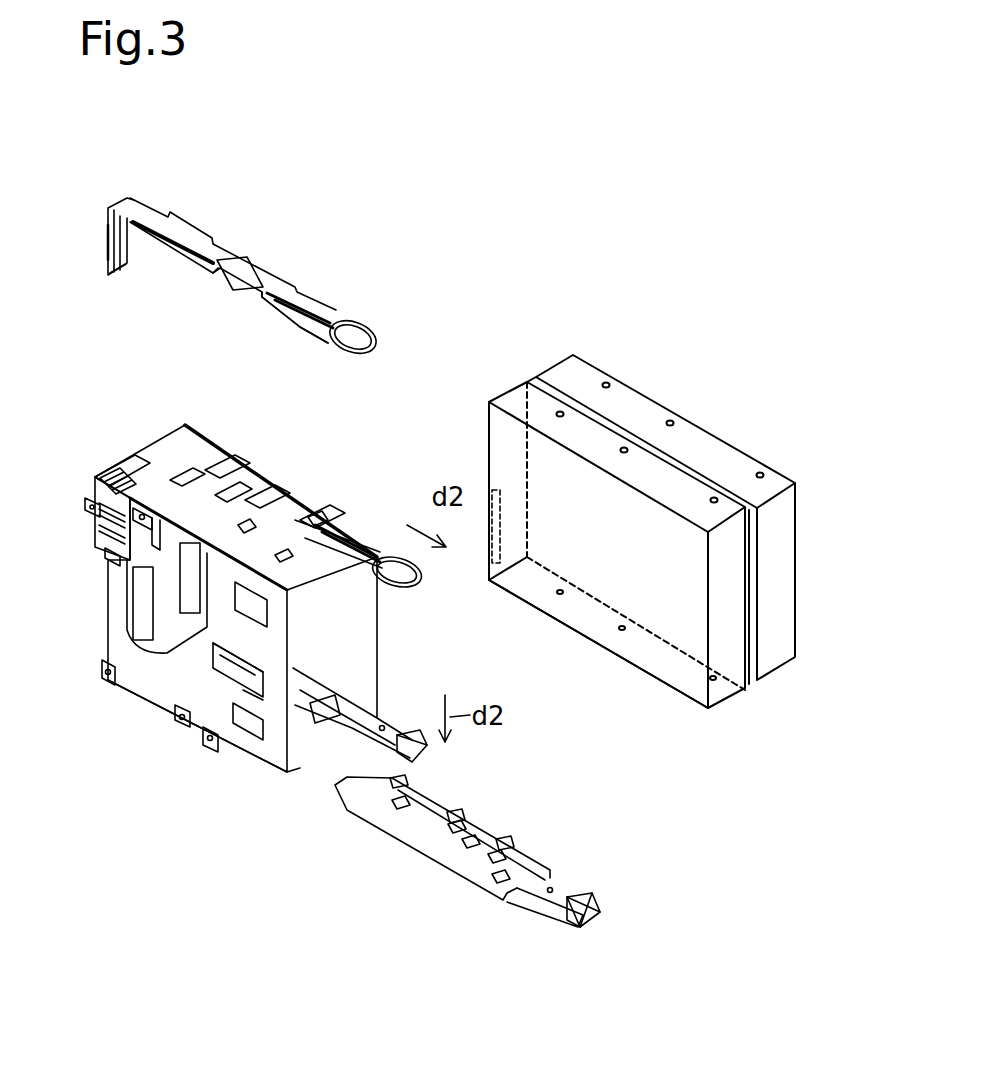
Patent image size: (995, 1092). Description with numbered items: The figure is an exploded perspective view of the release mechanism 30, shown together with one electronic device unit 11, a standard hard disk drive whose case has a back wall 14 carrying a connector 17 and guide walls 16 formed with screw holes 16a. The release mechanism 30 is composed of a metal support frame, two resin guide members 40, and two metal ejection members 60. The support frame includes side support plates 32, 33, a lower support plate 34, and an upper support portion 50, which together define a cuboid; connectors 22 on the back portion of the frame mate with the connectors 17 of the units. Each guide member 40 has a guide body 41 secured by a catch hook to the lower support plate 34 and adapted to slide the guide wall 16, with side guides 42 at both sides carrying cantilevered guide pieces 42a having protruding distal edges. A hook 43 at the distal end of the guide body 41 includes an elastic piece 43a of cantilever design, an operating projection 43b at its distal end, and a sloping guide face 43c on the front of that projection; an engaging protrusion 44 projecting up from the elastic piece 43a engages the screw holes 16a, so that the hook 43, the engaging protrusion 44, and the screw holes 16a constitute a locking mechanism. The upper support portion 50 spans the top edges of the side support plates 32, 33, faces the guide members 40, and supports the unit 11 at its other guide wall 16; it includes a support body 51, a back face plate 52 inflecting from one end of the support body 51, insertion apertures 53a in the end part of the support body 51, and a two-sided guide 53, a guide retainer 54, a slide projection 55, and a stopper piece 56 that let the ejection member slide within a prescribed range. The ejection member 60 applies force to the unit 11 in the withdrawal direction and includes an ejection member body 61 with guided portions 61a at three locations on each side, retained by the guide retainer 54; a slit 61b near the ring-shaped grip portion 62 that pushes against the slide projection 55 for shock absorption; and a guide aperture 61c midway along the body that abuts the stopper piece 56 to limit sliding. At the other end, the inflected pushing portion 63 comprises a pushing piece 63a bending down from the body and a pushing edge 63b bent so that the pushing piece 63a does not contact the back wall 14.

The electronic device unit 11 is at (654, 549).
The back wall 14 is at (512, 403).
The guide wall 16 is at (679, 658).
The screw hole 16a is at (717, 682).
The connector 17 is at (489, 538).
The connector 22 is at (143, 617).
The release mechanism 30 is at (218, 671).
The side support plate 32 is at (377, 628).
The side support plate 33 is at (170, 690).
The lower support plate 34 is at (297, 772).
The guide member 40 is at (355, 707).
The guide body 41 is at (463, 853).
The side guide 42 is at (441, 823).
The guide piece 42a is at (463, 820).
The hook 43 is at (555, 929).
The elastic piece 43a is at (537, 895).
The operating projection 43b is at (567, 917).
The sloping guide face 43c is at (593, 920).
The engaging protrusion 44 is at (553, 888).
The upper support portion 50 is at (82, 527).
The support body 51 is at (95, 530).
The back face plate 52 is at (95, 485).
The two-sided guide 53 is at (163, 498).
The insertion aperture 53a is at (123, 463).
The guide retainer 54 is at (313, 523).
The slide projection 55 is at (285, 567).
The stopper piece 56 is at (243, 530).
The ejection member 60 is at (228, 369).
The ejection member body 61 is at (257, 300).
The guided portion 61a is at (187, 263).
The slit 61b is at (307, 330).
The guide aperture 61c is at (243, 277).
The grip portion 62 is at (354, 313).
The inflected pushing portion 63 is at (114, 238).
The pushing piece 63a is at (107, 240).
The pushing edge 63b is at (117, 280).